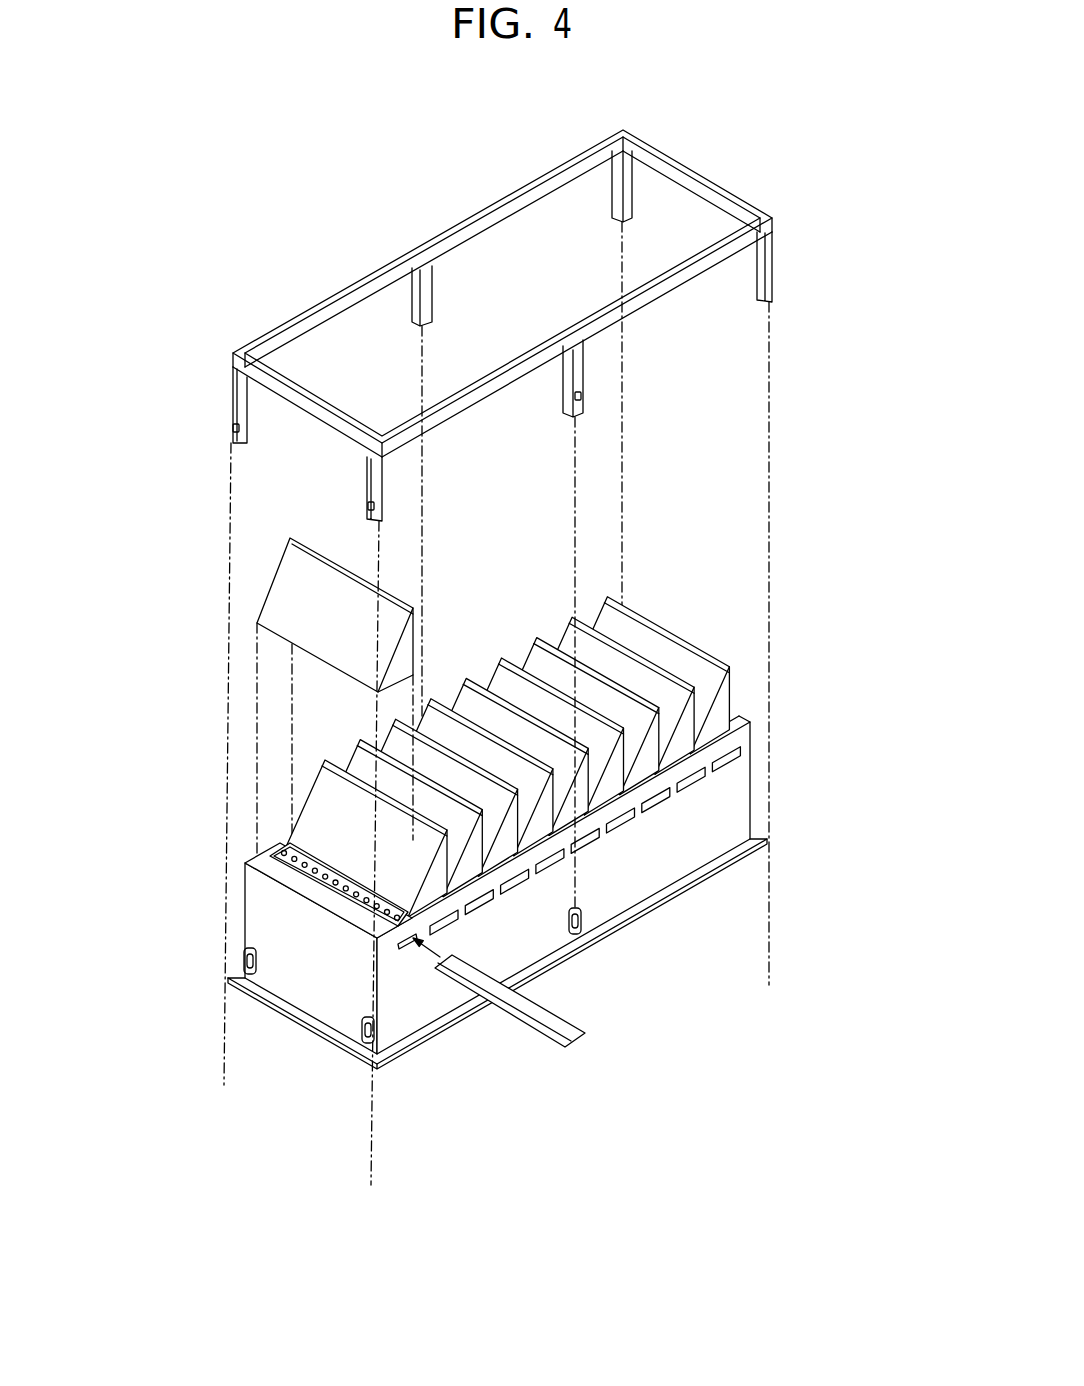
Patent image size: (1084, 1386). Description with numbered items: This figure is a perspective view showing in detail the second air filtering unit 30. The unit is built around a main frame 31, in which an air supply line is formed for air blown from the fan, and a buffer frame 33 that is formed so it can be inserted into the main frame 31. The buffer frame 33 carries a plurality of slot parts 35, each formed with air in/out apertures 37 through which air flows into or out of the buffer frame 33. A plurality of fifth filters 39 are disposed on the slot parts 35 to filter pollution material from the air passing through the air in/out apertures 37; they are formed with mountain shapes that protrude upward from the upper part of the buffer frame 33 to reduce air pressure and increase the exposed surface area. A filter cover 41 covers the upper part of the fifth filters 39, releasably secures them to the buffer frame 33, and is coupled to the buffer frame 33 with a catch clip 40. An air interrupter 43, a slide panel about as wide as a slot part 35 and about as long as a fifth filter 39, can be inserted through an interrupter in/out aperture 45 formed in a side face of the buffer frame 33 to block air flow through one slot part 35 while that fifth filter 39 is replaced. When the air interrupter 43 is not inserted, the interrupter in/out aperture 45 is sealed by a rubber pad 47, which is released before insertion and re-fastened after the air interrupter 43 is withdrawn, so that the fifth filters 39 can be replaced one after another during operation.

The second air filtering unit 30 is at (502, 667).
The main frame 31 is at (312, 1104).
The buffer frame 33 is at (737, 803).
The slot parts 35 is at (343, 880).
The air in/out apertures 37 is at (296, 848).
The fifth filters 39 is at (301, 598).
The catch clip 40 is at (244, 962).
The filter cover 41 is at (775, 255).
The air interrupter 43 is at (567, 1022).
The interrupter in/out aperture 45 is at (413, 947).
The rubber pad 47 is at (660, 805).